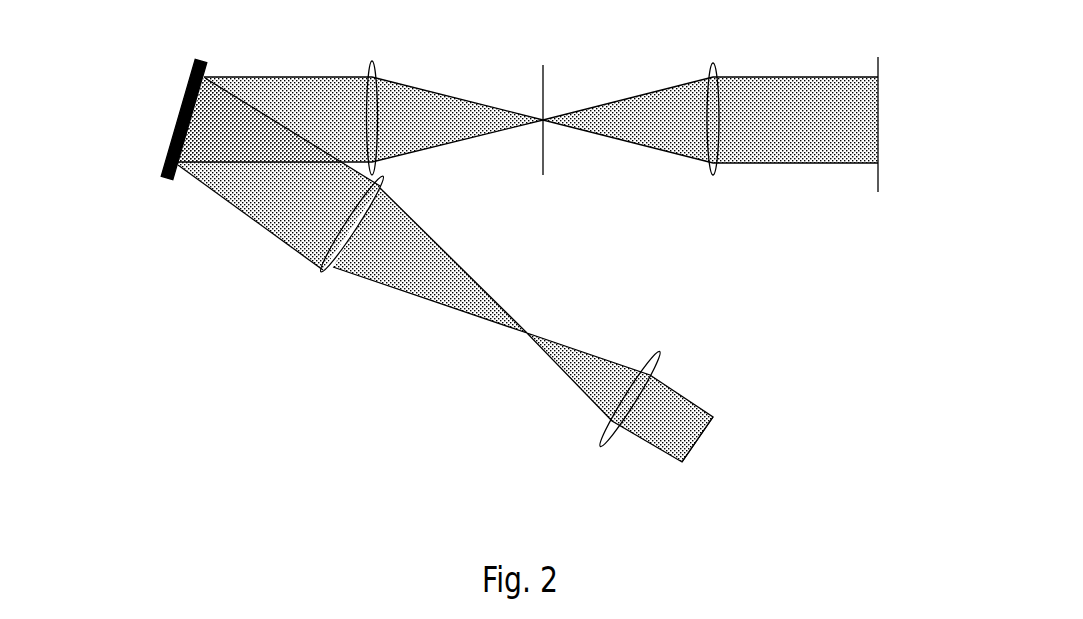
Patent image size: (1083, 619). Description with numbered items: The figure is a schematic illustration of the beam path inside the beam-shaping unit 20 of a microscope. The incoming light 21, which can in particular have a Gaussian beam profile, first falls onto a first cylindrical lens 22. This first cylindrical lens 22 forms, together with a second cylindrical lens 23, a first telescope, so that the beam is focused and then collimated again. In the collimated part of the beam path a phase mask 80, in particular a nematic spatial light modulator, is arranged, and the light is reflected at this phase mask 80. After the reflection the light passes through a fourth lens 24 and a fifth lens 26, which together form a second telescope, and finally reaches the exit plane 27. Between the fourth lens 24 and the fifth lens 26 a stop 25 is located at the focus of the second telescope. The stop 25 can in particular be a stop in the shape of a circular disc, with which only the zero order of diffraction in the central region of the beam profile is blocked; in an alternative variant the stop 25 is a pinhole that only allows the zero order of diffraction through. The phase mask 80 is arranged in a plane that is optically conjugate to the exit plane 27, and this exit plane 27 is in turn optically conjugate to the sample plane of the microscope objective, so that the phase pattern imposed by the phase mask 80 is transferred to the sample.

The beam-shaping unit 20 is at (297, 373).
The incoming light 21 is at (697, 415).
The first cylindrical lens 22 is at (623, 425).
The second cylindrical lens 23 is at (343, 247).
The fourth lens 24 is at (372, 83).
The stop 25 is at (543, 67).
The fifth lens 26 is at (715, 72).
The exit plane 27 is at (878, 63).
The phase mask 80 is at (170, 133).